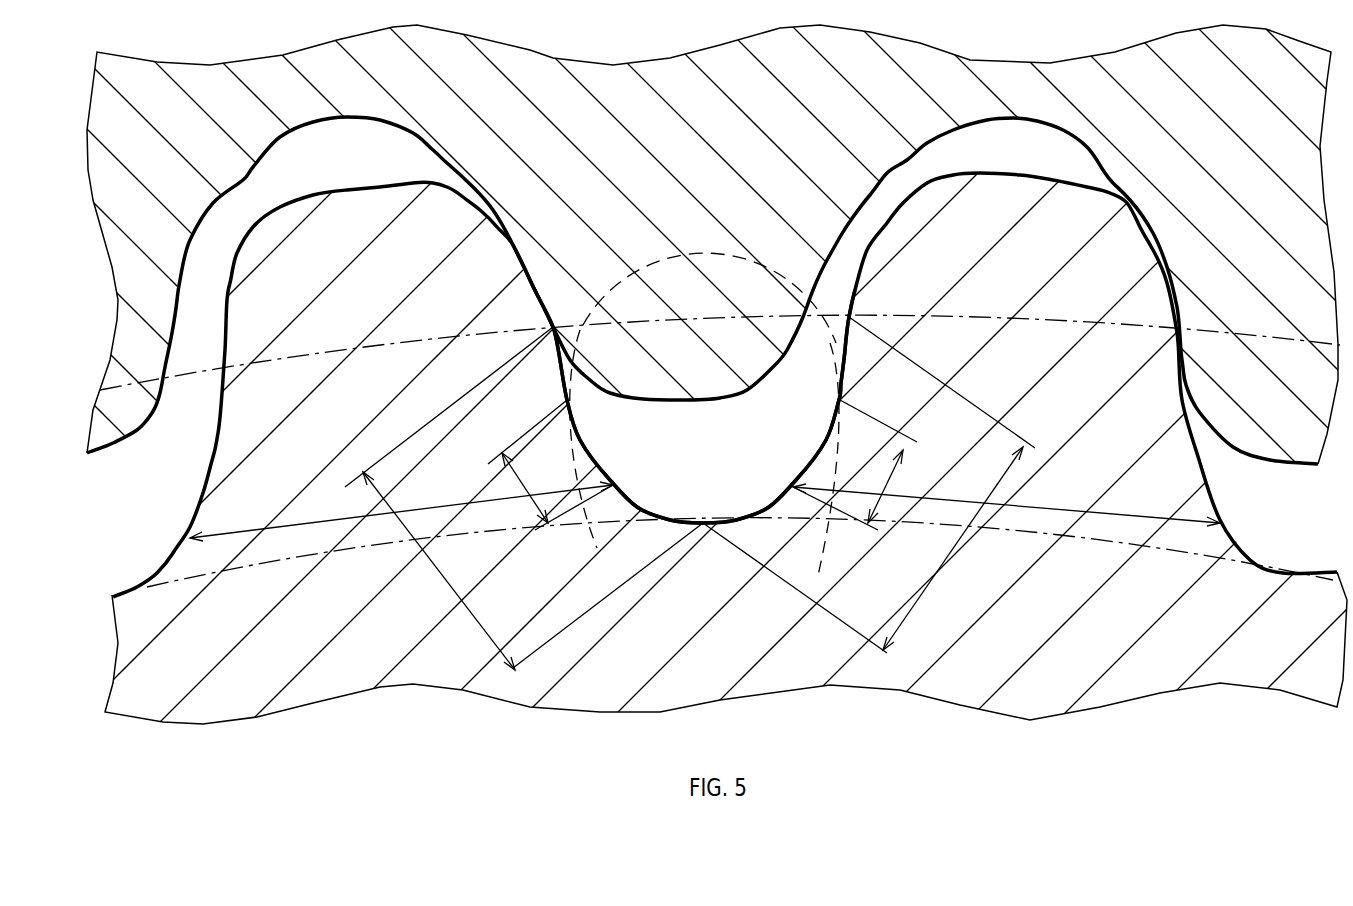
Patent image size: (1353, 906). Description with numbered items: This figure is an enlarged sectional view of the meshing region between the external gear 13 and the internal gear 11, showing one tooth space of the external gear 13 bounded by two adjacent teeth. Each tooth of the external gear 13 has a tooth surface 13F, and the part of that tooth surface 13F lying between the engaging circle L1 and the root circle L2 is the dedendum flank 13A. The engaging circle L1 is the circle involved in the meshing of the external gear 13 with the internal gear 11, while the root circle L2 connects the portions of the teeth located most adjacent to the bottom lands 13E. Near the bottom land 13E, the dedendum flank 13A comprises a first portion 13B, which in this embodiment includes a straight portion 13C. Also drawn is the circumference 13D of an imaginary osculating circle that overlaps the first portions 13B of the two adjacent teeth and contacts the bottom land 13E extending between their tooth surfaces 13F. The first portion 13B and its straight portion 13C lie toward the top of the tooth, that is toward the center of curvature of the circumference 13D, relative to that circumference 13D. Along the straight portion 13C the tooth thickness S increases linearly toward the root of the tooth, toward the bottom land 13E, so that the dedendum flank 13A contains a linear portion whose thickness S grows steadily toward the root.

The internal gear 11 is at (680, 147).
The external gear 13 is at (1073, 655).
The dedendum flank 13A is at (690, 493).
The first portion 13B is at (702, 465).
The straight portion 13C is at (585, 446).
The circumference of an osculating circle 13D is at (580, 553).
The bottom land 13E is at (703, 521).
The tooth surface 13F is at (577, 357).
The engaging circle L1 is at (1048, 325).
The root circle L2 is at (1122, 547).
The thickness S is at (705, 510).